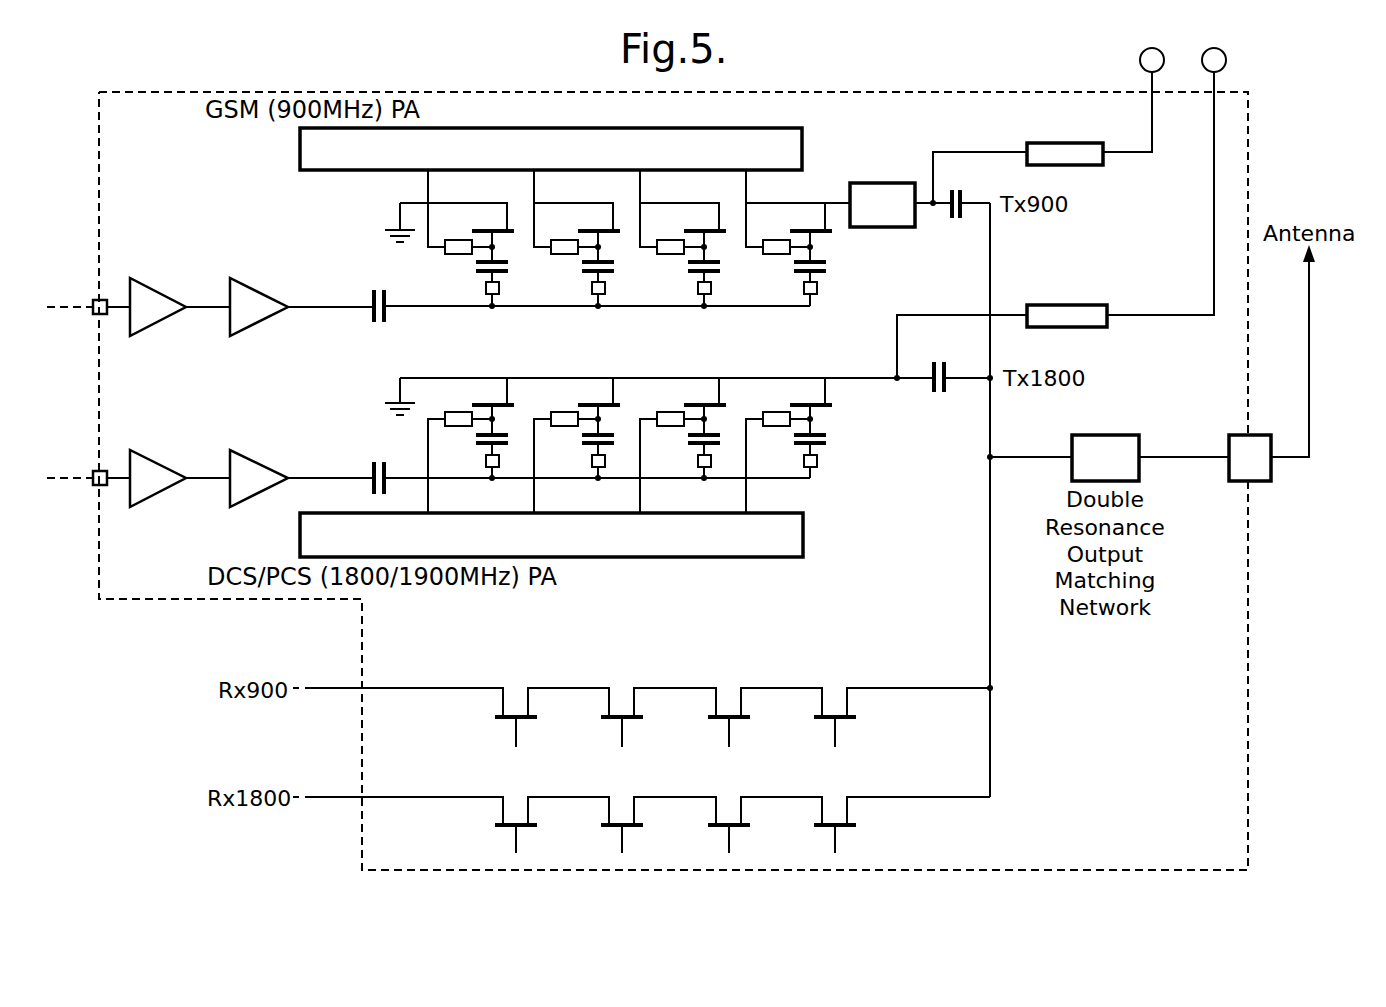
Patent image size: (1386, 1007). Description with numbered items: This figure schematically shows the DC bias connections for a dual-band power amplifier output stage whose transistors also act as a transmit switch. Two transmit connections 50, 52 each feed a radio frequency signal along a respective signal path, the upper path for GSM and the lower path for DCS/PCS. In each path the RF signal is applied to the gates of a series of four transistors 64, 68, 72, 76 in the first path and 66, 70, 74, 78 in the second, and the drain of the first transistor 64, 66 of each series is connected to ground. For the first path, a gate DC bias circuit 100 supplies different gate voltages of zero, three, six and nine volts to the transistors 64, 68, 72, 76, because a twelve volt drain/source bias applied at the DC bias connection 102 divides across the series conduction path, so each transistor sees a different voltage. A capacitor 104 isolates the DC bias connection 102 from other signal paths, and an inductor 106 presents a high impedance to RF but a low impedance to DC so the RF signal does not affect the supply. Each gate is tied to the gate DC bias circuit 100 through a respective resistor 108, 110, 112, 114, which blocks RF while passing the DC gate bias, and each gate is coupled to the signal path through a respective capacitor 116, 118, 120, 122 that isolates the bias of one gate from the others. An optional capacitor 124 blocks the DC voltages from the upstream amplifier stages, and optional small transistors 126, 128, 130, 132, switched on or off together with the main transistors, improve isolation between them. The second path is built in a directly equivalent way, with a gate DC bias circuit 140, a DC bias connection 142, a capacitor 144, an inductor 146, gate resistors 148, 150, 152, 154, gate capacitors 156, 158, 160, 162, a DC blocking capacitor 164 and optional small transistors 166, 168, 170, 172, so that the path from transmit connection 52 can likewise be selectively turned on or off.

The transmit connection 50 is at (93, 304).
The transmit connection 52 is at (93, 476).
The transistor 64 is at (504, 216).
The transistor 66 is at (504, 390).
The transistor 68 is at (610, 216).
The transistor 70 is at (610, 390).
The transistor 72 is at (716, 216).
The transistor 74 is at (716, 390).
The transistor 76 is at (822, 216).
The transistor 78 is at (822, 390).
The gate DC bias circuit 100 is at (577, 138).
The DC bias connection 102 is at (1140, 60).
The capacitor 104 is at (946, 218).
The inductor 106 is at (1070, 128).
The resistor 108 is at (459, 247).
The resistor 110 is at (565, 247).
The resistor 112 is at (671, 247).
The resistor 114 is at (777, 247).
The capacitor 116 is at (479, 275).
The capacitor 118 is at (585, 275).
The capacitor 120 is at (691, 275).
The capacitor 122 is at (797, 275).
The capacitor 124 is at (372, 293).
The small transistor 126 is at (499, 289).
The small transistor 128 is at (605, 289).
The small transistor 130 is at (711, 289).
The small transistor 132 is at (817, 289).
The gate DC bias circuit 140 is at (690, 557).
The DC bias connection 142 is at (1226, 60).
The capacitor 144 is at (932, 393).
The inductor 146 is at (1058, 312).
The resistor 148 is at (459, 419).
The resistor 150 is at (565, 419).
The resistor 152 is at (671, 419).
The resistor 154 is at (777, 419).
The capacitor 156 is at (484, 446).
The capacitor 158 is at (590, 446).
The capacitor 160 is at (696, 446).
The capacitor 162 is at (802, 446).
The capacitor 164 is at (372, 464).
The small transistor 166 is at (492, 462).
The small transistor 168 is at (598, 462).
The small transistor 170 is at (704, 462).
The small transistor 172 is at (810, 462).